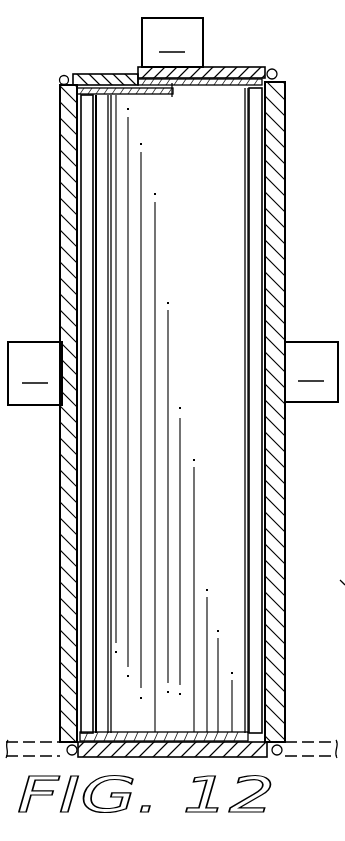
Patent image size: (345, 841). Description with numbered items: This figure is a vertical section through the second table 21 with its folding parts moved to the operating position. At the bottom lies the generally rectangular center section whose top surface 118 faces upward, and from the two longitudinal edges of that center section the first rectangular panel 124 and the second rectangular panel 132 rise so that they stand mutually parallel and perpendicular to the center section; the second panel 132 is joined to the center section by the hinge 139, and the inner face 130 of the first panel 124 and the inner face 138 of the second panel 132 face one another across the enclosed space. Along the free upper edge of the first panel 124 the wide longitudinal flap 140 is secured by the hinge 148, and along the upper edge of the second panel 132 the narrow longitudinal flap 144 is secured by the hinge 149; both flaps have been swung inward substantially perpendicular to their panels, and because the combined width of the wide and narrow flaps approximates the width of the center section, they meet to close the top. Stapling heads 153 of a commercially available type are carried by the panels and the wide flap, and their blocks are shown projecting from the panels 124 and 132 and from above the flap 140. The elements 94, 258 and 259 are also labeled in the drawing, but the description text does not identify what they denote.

The second table 21 is at (295, 133).
The housing wall 94 is at (337, 572).
The top surface 118 is at (173, 764).
The first rectangular panel 124 is at (285, 513).
The inner face 130 is at (262, 562).
The second rectangular panel 132 is at (65, 553).
The inner face 138 is at (110, 507).
The hinge 139 is at (64, 746).
The wide longitudinal flap 140 is at (227, 67).
The narrow longitudinal flap 144 is at (106, 73).
The hinge 148 is at (279, 72).
The hinge 149 is at (59, 78).
The stapling heads 153 is at (173, 211).
The left thin plate 258 is at (122, 90).
The right thin plate 259 is at (217, 92).